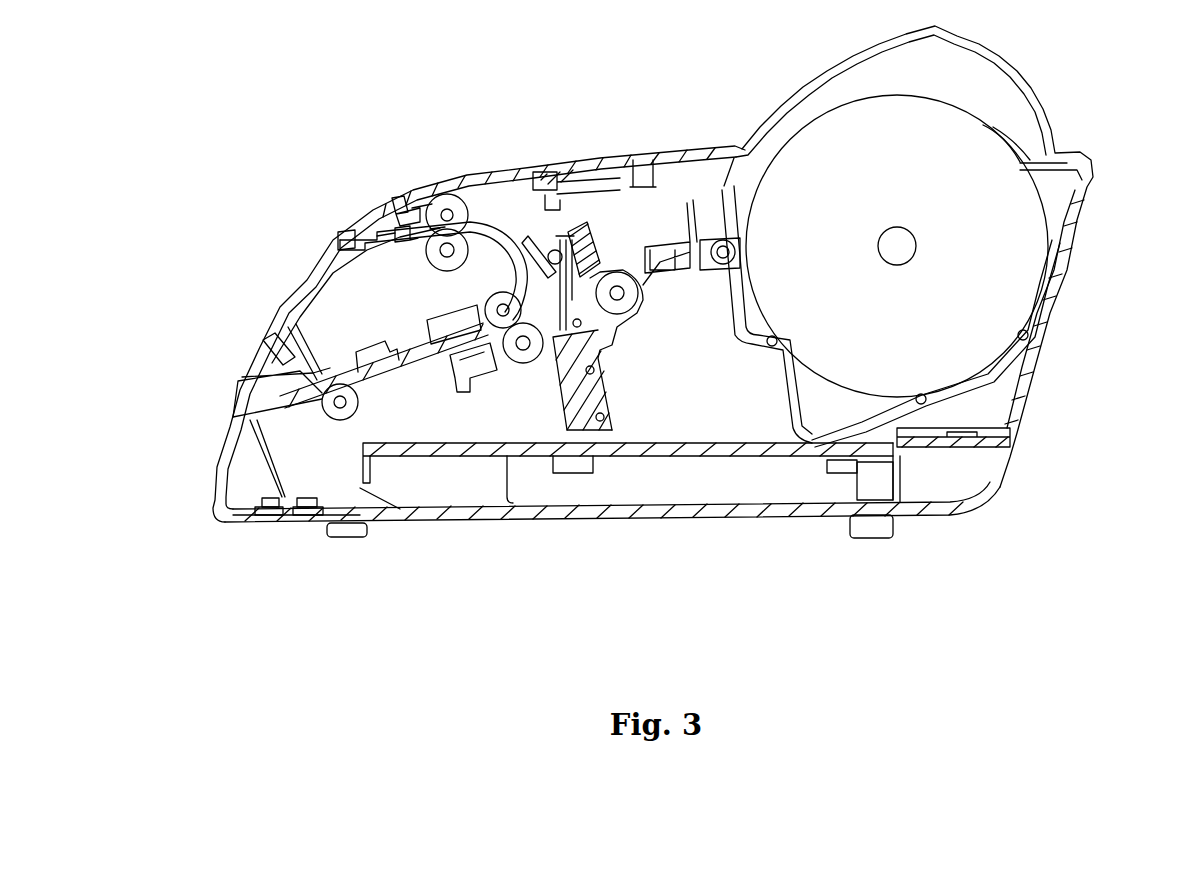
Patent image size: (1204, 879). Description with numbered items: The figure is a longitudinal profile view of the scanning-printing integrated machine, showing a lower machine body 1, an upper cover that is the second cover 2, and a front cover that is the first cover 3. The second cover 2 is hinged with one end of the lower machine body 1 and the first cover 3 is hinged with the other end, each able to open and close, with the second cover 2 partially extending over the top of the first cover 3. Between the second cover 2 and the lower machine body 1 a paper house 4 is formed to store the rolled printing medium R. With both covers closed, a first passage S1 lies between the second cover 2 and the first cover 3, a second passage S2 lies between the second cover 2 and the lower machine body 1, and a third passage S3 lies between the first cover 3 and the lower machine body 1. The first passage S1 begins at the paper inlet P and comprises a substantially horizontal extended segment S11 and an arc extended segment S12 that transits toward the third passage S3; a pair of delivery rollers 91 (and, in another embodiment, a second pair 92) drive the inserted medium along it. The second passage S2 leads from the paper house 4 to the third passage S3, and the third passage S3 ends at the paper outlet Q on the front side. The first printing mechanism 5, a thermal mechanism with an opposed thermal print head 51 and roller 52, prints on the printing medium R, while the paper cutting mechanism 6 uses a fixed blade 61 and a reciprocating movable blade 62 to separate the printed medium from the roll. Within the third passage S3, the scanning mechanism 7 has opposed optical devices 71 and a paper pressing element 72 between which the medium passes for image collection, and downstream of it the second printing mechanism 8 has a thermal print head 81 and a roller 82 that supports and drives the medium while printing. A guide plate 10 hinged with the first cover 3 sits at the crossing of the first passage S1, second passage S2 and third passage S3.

The lower machine body 1 is at (662, 524).
The second cover 2 is at (914, 243).
The first cover 3 is at (475, 334).
The paper house 4 is at (823, 397).
The first printing mechanism 5 is at (632, 226).
The thermal print head 51 is at (618, 288).
The roller 52 is at (609, 262).
The paper cutting mechanism 6 is at (540, 459).
The fixed blade 61 is at (563, 290).
The movable blade 62 is at (585, 350).
The scanning mechanism 7 is at (430, 467).
The optical devices 71 is at (456, 325).
The paper pressing element 72 is at (462, 360).
The second printing mechanism 8 is at (364, 476).
The thermal print head 81 is at (337, 372).
The roller 82 is at (340, 404).
The delivery rollers 91 is at (445, 207).
The delivery rollers 92 is at (500, 300).
The guide plate 10 is at (546, 245).
The paper inlet P is at (364, 221).
The paper outlet Q is at (252, 394).
The printing medium R is at (1012, 255).
The first passage S1 is at (497, 157).
The horizontal extended segment S11 is at (403, 200).
The arc extended segment S12 is at (540, 243).
The second passage S2 is at (648, 250).
The third passage S3 is at (392, 365).